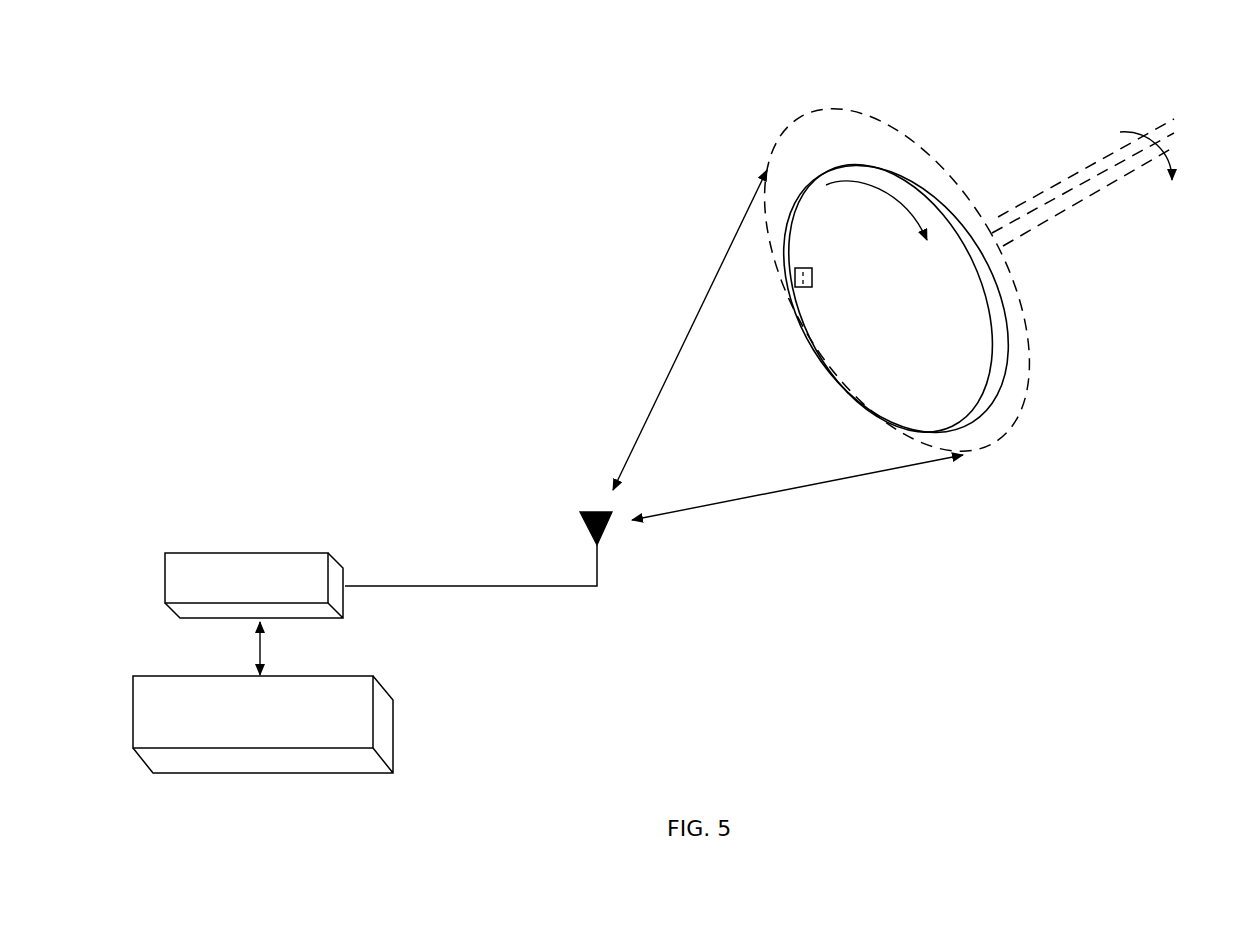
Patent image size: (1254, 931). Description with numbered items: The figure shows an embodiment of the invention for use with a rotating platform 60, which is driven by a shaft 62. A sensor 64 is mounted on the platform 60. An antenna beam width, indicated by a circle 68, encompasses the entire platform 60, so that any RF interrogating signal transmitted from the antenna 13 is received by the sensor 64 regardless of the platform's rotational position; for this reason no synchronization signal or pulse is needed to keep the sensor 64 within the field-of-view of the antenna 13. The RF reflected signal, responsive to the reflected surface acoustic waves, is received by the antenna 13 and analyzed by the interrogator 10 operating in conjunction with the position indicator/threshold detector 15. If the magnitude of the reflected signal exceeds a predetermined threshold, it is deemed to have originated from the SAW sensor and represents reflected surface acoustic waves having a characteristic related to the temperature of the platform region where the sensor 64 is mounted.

The interrogator 10 is at (253, 553).
The antenna 13 is at (596, 508).
The position indicator/threshold detector 15 is at (313, 676).
The rotating platform 60 is at (1013, 330).
The shaft 62 is at (1068, 178).
The sensor 64 is at (795, 277).
The circle 68 is at (827, 112).